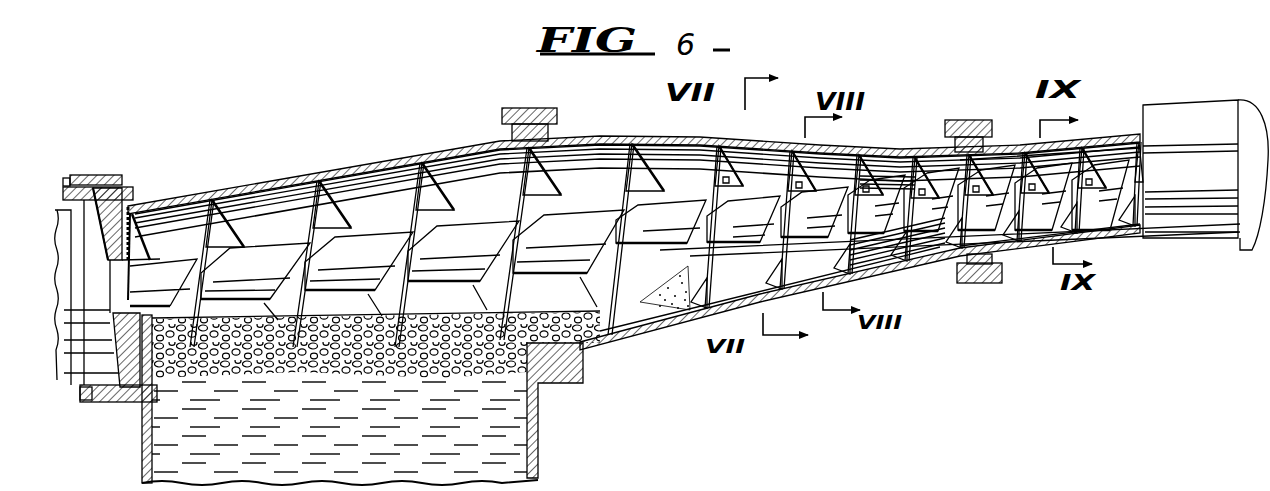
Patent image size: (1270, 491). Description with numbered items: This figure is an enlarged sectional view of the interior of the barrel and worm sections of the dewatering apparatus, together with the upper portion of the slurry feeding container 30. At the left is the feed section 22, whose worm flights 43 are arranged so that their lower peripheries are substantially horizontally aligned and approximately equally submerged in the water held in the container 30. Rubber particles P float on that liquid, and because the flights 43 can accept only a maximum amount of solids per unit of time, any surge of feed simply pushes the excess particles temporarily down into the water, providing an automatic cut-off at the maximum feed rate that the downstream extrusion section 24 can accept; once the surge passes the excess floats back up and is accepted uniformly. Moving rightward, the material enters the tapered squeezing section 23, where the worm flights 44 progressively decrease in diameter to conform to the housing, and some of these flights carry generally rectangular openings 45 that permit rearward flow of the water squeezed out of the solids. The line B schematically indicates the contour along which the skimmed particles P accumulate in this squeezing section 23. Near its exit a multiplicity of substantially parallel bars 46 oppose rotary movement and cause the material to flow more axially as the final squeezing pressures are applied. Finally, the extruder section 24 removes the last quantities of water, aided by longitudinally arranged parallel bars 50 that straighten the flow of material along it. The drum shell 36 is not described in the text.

The feed section 22 is at (303, 126).
The drum shell 36 is at (370, 166).
The flights 43 is at (392, 298).
The line B is at (641, 288).
The rectangularly shaped openings 45 is at (770, 262).
The parallel bars 46 is at (880, 170).
The worm flights 44 is at (730, 318).
The squeezing section 23 is at (884, 288).
The extruder section 24 is at (1110, 254).
The parallel bars 50 is at (1118, 137).
The container 30 is at (538, 437).
The rubber particles P is at (288, 372).